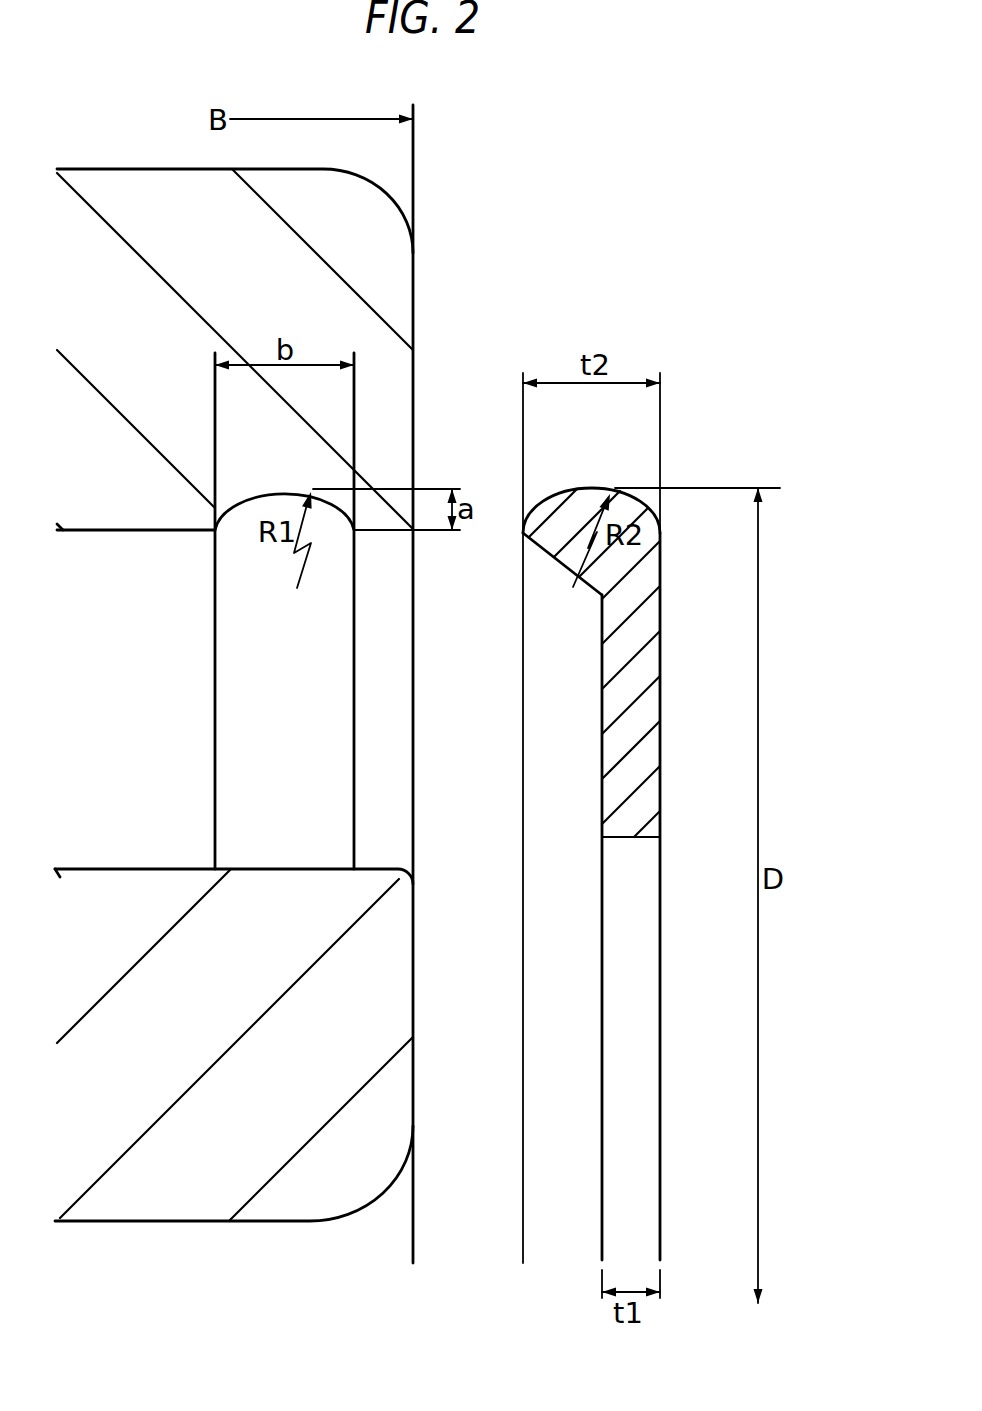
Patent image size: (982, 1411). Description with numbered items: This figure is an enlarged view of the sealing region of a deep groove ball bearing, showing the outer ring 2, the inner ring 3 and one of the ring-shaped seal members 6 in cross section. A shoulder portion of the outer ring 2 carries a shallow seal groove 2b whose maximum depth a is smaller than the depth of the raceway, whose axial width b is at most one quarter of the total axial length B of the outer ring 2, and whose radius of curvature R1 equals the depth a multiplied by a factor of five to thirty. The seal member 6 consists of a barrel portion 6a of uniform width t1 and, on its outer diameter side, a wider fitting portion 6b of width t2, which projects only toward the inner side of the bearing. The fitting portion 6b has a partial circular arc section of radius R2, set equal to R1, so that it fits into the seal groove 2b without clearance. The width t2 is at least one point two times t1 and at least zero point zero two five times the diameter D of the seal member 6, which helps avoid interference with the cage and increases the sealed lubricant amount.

The outer ring 2 is at (400, 306).
The seal groove 2b is at (272, 488).
The inner ring 3 is at (387, 990).
The seal member 6 is at (588, 840).
The barrel portion 6a is at (647, 712).
The fitting portion 6b is at (587, 497).